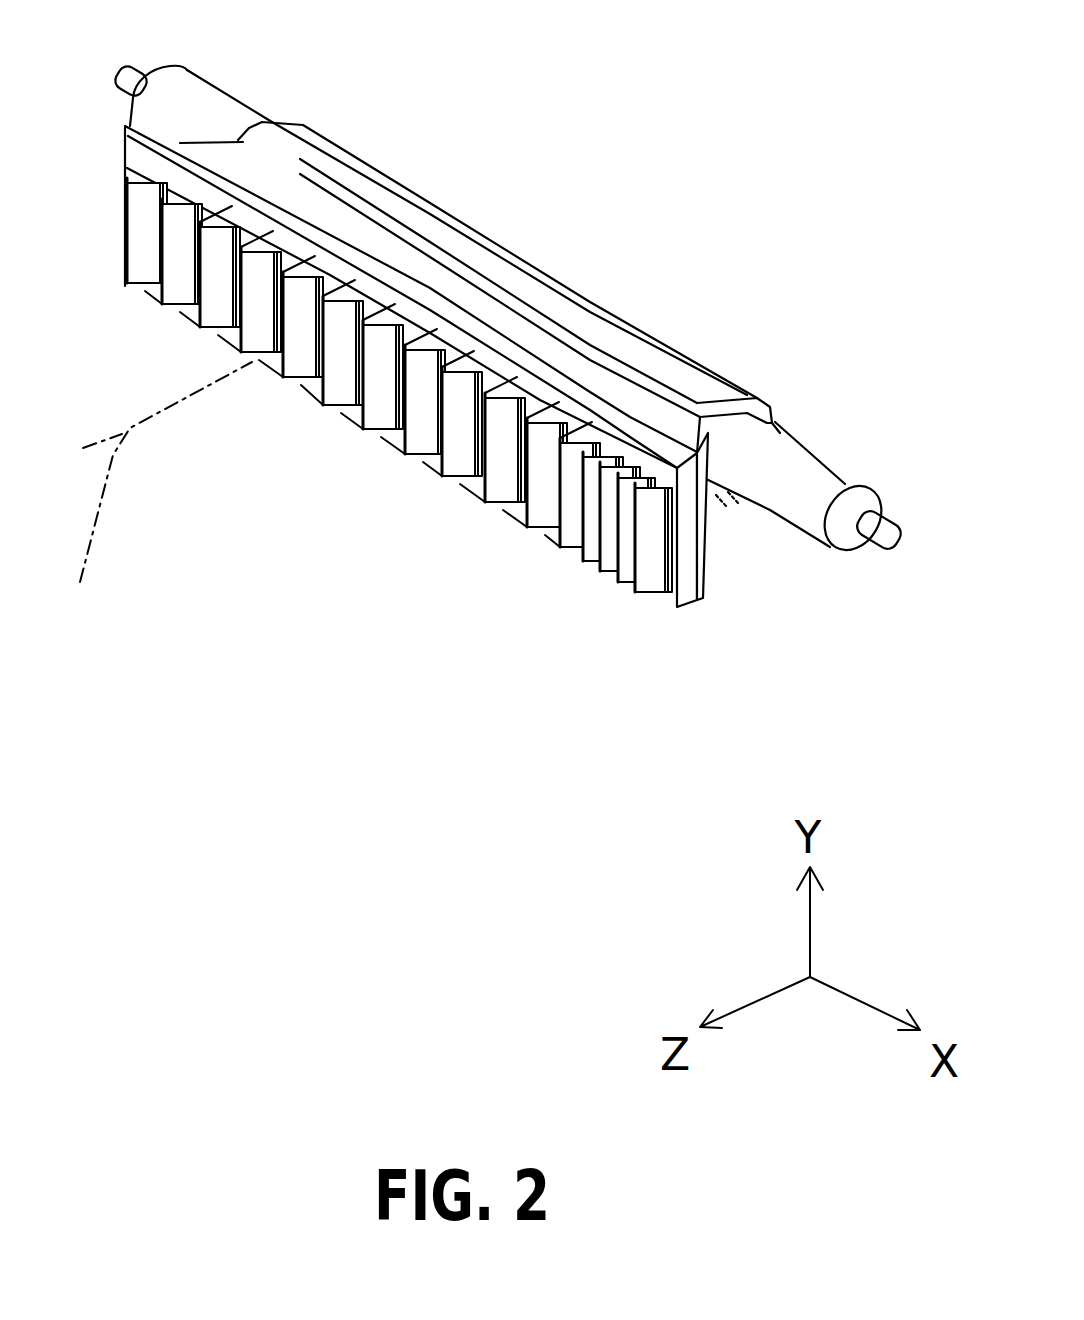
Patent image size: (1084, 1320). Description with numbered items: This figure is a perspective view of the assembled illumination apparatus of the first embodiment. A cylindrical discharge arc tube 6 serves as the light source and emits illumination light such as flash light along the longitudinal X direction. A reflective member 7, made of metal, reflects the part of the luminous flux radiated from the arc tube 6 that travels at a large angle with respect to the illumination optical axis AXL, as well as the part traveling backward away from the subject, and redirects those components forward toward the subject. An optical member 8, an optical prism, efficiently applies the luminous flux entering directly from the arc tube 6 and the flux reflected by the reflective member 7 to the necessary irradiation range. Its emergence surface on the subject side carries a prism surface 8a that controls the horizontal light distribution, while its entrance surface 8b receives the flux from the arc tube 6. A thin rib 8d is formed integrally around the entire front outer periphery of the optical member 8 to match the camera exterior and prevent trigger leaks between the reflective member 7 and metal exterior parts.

The arc tube 6 is at (782, 482).
The reflective member 7 is at (545, 295).
The optical member 8 is at (297, 190).
The prism surface 8a is at (383, 403).
The entrance surface 8b is at (712, 458).
The thin rib 8d is at (583, 400).
The illumination optical axis AXL is at (155, 505).